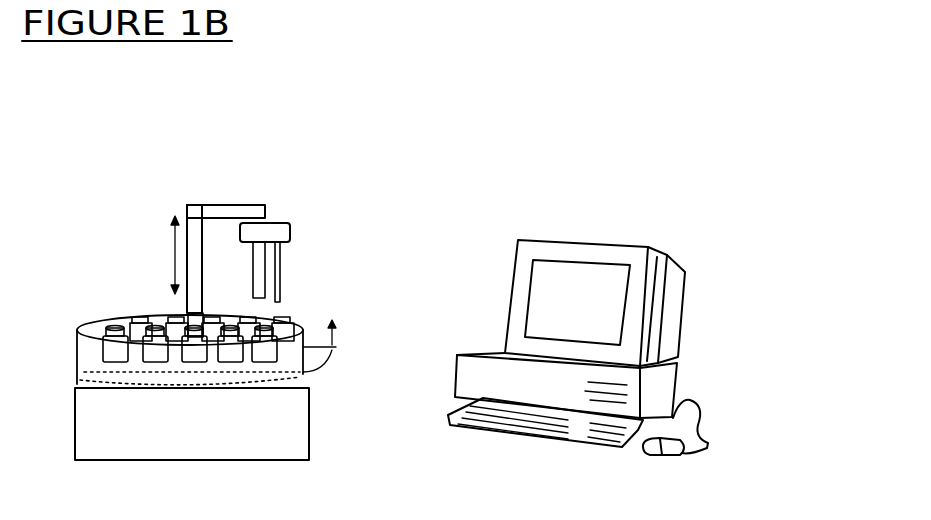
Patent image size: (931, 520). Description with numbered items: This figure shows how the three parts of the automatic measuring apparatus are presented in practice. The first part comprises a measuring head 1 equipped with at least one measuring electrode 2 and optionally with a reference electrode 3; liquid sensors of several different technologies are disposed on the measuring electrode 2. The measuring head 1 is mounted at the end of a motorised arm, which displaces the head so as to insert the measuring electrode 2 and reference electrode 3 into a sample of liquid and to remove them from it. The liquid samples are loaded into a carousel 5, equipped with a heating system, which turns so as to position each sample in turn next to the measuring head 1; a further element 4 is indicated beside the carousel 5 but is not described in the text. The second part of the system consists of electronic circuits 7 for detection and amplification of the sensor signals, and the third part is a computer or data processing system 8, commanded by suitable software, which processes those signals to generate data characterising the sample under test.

The measuring head 1 is at (251, 196).
The measuring electrode 2 is at (260, 264).
The reference electrode 3 is at (281, 274).
The indicator 4 is at (319, 346).
The carousel 5 is at (88, 360).
The electronic circuits 7 is at (189, 434).
The computer or data processing system 8 is at (706, 265).